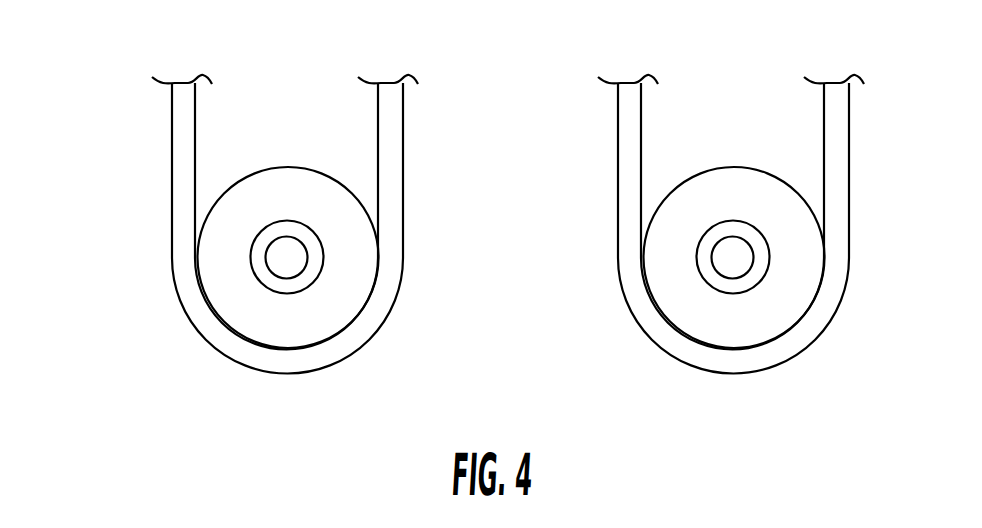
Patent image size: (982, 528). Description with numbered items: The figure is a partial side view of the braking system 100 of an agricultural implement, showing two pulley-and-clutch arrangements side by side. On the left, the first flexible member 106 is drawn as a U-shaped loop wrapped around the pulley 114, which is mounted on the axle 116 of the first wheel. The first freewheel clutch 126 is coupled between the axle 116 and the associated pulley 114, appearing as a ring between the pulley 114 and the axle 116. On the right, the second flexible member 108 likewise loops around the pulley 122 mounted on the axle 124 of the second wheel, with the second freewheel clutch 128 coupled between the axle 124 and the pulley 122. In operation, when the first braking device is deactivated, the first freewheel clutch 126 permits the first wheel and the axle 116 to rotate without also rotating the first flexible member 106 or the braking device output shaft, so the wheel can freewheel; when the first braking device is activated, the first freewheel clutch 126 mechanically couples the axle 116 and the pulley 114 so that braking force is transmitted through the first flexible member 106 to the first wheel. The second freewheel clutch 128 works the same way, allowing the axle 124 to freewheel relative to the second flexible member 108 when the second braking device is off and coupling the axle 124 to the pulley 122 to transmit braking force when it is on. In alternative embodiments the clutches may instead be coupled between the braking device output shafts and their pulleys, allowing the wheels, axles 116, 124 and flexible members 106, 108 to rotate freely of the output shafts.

The braking system 100 is at (118, 110).
The first flexible member 106 is at (403, 170).
The second flexible member 108 is at (750, 224).
The pulley 114 is at (220, 263).
The axle 116 is at (283, 263).
The pulley 122 is at (680, 257).
The axle 124 is at (674, 312).
The first freewheel clutch 126 is at (273, 235).
The second freewheel clutch 128 is at (733, 193).